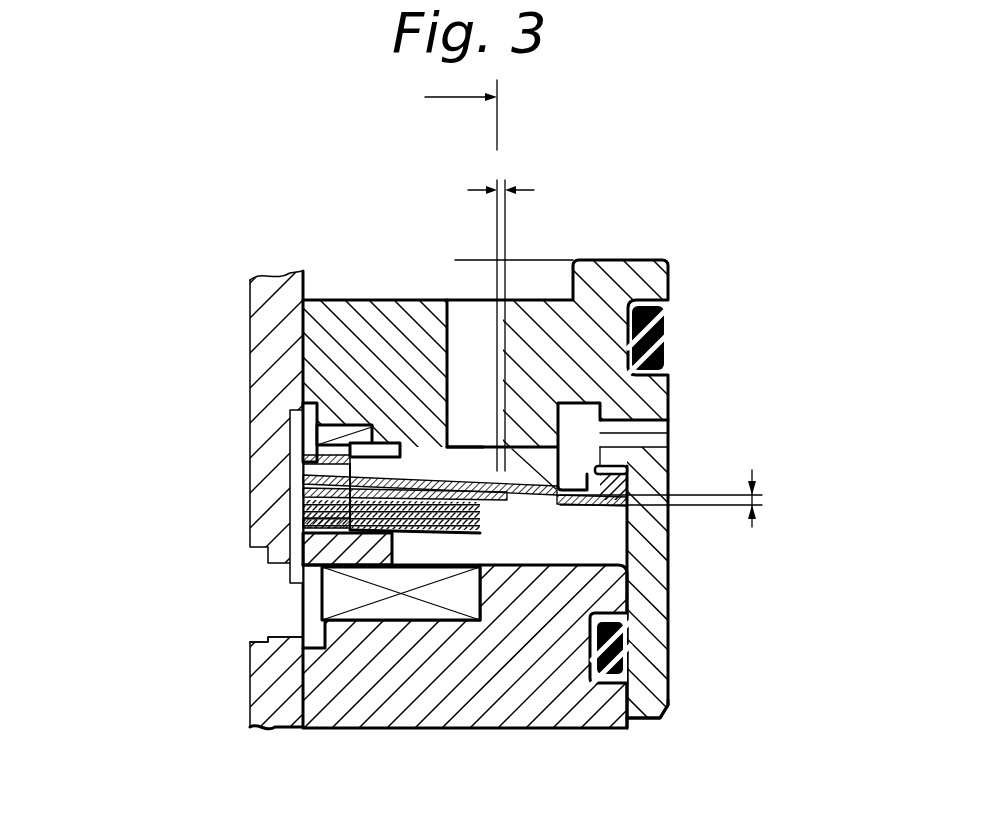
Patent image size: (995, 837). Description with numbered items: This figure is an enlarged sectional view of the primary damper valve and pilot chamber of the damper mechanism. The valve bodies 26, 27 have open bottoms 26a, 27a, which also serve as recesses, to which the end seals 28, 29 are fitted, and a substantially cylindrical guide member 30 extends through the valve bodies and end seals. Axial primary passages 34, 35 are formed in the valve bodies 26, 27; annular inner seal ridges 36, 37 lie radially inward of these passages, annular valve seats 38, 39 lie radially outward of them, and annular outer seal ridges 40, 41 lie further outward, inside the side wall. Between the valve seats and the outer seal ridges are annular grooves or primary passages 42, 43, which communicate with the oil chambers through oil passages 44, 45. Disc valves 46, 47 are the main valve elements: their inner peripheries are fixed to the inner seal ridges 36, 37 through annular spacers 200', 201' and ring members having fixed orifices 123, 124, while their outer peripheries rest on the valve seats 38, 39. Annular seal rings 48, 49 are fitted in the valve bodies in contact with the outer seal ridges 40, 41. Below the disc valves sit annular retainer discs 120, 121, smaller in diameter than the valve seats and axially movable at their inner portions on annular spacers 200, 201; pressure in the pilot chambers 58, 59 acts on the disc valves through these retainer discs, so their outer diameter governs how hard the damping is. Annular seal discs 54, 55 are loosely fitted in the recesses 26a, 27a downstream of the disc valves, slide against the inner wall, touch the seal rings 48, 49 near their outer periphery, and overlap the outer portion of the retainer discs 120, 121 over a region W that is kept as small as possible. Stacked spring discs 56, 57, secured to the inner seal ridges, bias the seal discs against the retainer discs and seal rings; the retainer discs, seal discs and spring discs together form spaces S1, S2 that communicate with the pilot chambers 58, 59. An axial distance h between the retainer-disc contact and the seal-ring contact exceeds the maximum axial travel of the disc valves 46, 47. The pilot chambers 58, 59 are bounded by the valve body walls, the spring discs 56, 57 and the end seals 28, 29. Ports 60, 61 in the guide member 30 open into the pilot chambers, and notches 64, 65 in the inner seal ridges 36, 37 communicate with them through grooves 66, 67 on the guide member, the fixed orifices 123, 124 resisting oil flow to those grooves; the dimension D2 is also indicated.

The valve body 26 is at (581, 326).
The valve body 27 is at (640, 283).
The open bottom / recess of valve body 26a is at (719, 732).
The open bottom / recess of valve body 27a is at (628, 725).
The end seal 28 is at (468, 661).
The end seal 29 is at (468, 661).
The guide member 30 is at (275, 659).
The primary passage (axial oil passage) 34 is at (469, 325).
The primary passage (axial oil passage) 35 is at (468, 262).
The inner seal ridge 36 is at (223, 490).
The inner seal ridge 37 is at (297, 452).
The valve seat 38 is at (702, 426).
The valve seat 39 is at (612, 443).
The outer seal ridge 40 is at (717, 454).
The outer seal ridge 41 is at (630, 470).
The annular groove (primary passage) 42 is at (681, 430).
The annular groove (primary passage) 43 is at (640, 428).
The oil passage 44 is at (644, 531).
The oil passage 45 is at (668, 414).
The disc valve 46 is at (523, 345).
The disc valve 47 is at (523, 445).
The seal ring 48 is at (581, 481).
The seal ring 49 is at (622, 494).
The seal disc 54 is at (541, 631).
The seal disc 55 is at (545, 535).
The spring disc (bias means) 56 is at (320, 660).
The spring disc (bias means) 57 is at (303, 727).
The pilot chamber 58 is at (607, 700).
The pilot chamber 59 is at (560, 640).
The port 60 is at (223, 617).
The port 61 is at (274, 606).
The notch 64 is at (257, 398).
The notch 65 is at (340, 425).
The groove (upstream passage) 66 is at (325, 498).
The groove (upstream passage) 67 is at (300, 478).
The retainer disc 120 is at (381, 344).
The retainer disc 121 is at (373, 445).
The fixed orifice 123 is at (271, 343).
The fixed orifice 124 is at (271, 343).
The annular spacer 200 is at (308, 628).
The annular spacer 201 is at (308, 628).
The annular spacer 200' is at (229, 456).
The annular spacer 201' is at (229, 456).
The space S1 is at (391, 653).
The space S2 is at (413, 545).
The diameter D2 is at (441, 115).
The overlapped region W is at (501, 175).
The axial distance h is at (669, 498).